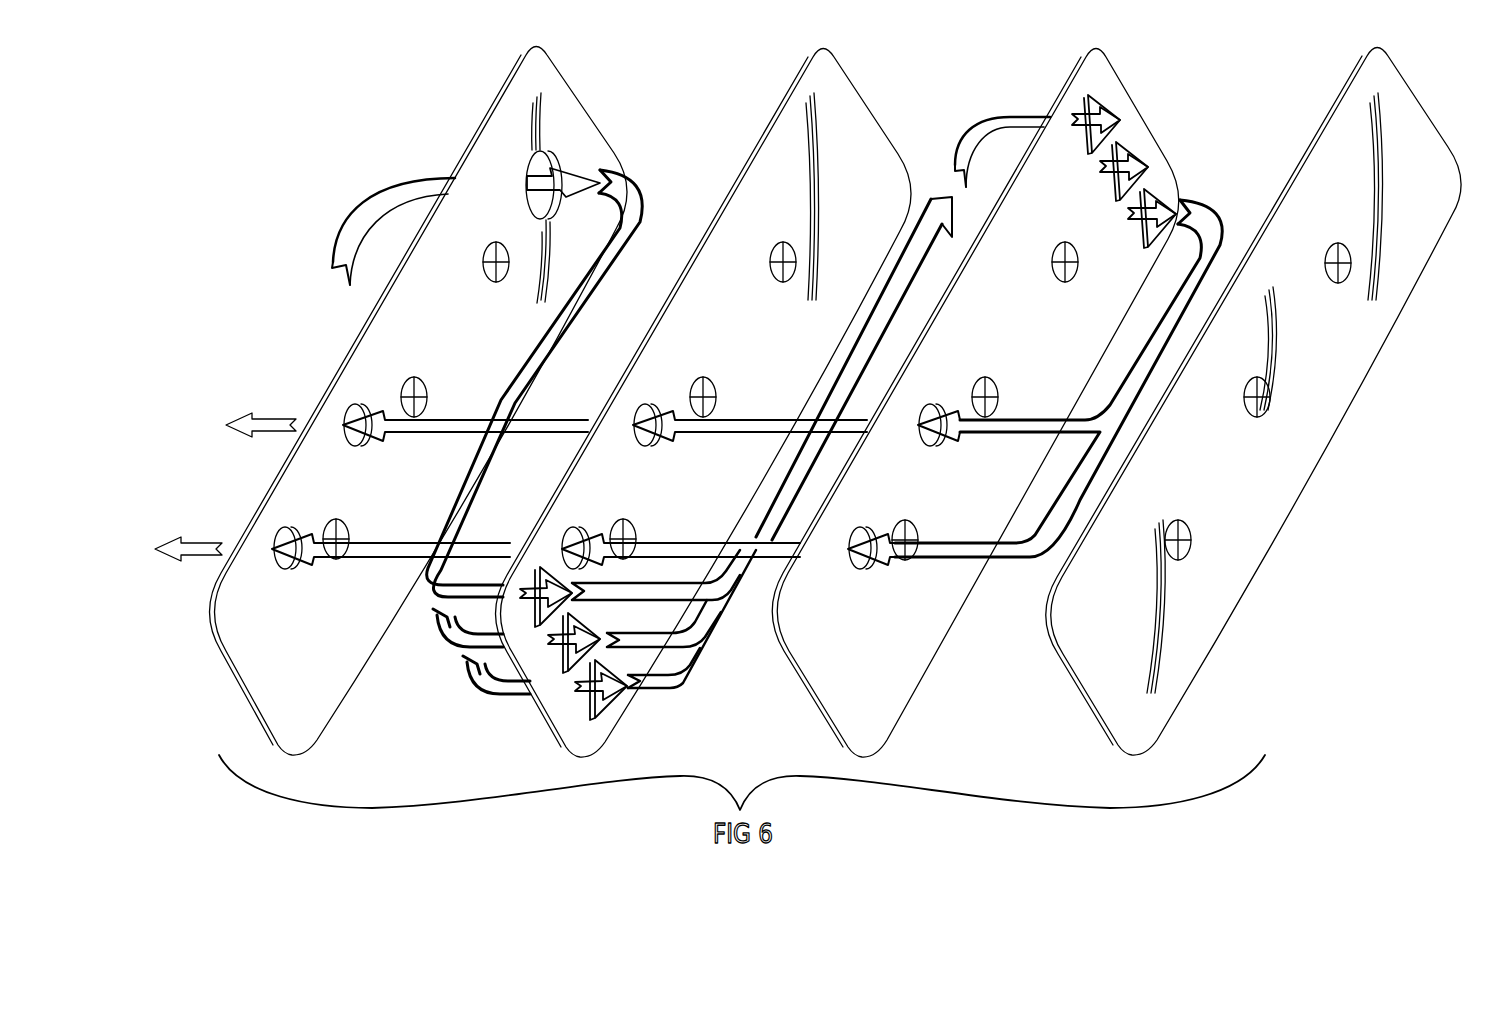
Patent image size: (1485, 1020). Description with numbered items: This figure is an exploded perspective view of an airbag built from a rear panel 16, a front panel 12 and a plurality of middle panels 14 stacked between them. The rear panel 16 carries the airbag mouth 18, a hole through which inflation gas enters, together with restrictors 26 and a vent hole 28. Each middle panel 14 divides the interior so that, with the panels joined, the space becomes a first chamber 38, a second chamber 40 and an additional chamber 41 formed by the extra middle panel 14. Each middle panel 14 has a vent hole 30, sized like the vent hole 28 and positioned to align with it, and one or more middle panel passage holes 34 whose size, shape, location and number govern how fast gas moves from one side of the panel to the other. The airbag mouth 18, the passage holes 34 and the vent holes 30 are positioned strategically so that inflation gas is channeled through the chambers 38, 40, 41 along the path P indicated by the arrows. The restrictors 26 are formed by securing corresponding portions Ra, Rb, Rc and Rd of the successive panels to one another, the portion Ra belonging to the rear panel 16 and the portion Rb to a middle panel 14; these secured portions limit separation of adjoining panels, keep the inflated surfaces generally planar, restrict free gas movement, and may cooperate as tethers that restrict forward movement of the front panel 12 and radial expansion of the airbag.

The front panel 12 is at (1298, 438).
The middle panel 14 is at (760, 198).
The rear panel 16 is at (510, 100).
The airbag mouth 18 is at (535, 162).
The restrictor 26 is at (408, 385).
The vent hole 28 is at (350, 412).
The vent hole 30 is at (648, 405).
The middle panel passage hole 34 is at (540, 567).
The first chamber 38 is at (667, 260).
The second chamber 40 is at (984, 218).
The additional chamber 41 is at (1244, 231).
The path P is at (370, 200).
The portion Ra is at (503, 280).
The portion Rb is at (797, 262).
The portion Rc is at (1075, 268).
The portion Rd is at (1355, 268).